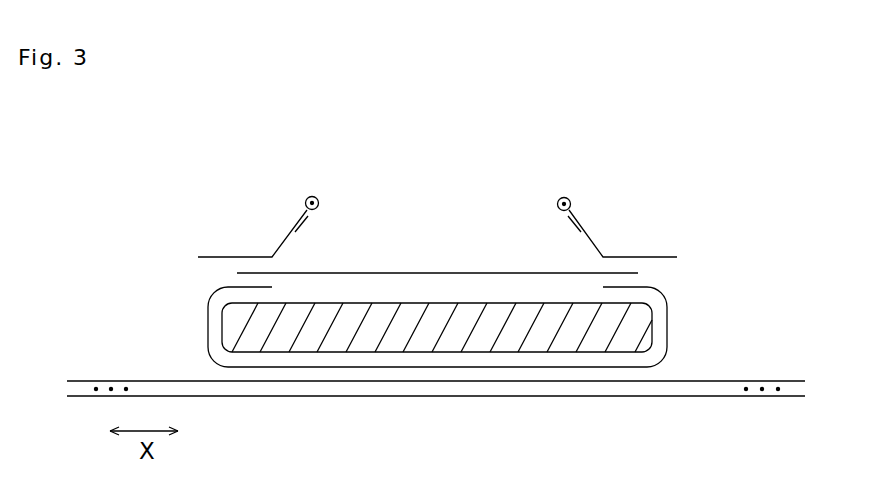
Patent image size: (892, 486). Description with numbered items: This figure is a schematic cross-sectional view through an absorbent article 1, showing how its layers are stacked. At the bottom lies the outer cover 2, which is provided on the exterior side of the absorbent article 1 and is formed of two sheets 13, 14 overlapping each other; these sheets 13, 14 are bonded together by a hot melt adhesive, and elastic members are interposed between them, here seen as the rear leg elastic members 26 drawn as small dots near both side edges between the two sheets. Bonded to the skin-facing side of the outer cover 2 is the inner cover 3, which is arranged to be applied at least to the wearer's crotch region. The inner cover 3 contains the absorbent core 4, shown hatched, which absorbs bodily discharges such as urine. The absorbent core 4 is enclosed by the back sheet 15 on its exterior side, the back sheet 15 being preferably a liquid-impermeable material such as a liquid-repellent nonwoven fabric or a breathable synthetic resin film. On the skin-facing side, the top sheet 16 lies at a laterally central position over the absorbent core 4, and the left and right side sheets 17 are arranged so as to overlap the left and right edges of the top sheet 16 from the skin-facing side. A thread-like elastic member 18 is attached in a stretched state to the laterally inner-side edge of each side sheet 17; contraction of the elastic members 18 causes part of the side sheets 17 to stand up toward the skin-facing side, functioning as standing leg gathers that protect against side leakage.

The absorbent article 1 is at (157, 147).
The outer cover 2 is at (260, 396).
The inner cover 3 is at (207, 312).
The absorbent core 4 is at (652, 318).
The sheet 13 is at (735, 381).
The sheet 14 is at (728, 398).
The back sheet 15 is at (208, 343).
The top sheet 16 is at (366, 272).
The side sheet 17 is at (236, 257).
The elastic member 18 is at (309, 199).
The rear leg elastic member 26 is at (95, 393).